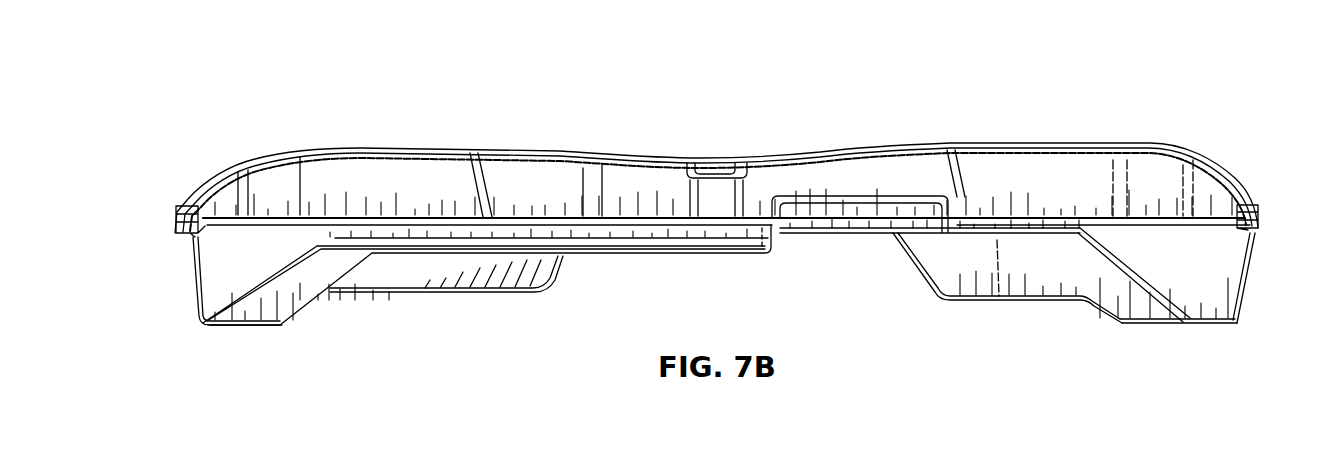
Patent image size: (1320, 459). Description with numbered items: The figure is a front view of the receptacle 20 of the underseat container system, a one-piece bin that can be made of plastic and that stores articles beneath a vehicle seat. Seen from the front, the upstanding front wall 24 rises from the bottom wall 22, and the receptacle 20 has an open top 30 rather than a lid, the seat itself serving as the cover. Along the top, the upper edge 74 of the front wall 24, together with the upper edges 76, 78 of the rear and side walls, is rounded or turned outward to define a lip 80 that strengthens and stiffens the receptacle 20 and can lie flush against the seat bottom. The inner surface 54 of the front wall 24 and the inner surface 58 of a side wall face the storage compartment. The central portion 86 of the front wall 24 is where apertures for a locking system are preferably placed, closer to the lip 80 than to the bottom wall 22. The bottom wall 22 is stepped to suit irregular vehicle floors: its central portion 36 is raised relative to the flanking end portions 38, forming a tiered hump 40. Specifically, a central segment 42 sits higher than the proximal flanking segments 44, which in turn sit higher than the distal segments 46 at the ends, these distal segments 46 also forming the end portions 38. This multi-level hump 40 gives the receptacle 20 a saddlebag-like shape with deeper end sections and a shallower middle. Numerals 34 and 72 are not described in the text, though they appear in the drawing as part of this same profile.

The receptacle 20 is at (266, 70).
The bottom wall 22 is at (732, 255).
The front wall 24 is at (1092, 165).
The open top 30 is at (221, 197).
The inclined wall 34 is at (1068, 305).
The central portion 36 is at (613, 256).
The end portions 38 is at (249, 331).
The hump 40 is at (813, 157).
The central segment 42 is at (641, 256).
The proximal flanking segments 44 is at (497, 292).
The distal segments 46 is at (227, 331).
The inner surface of front wall 54 is at (326, 172).
The inner surface of side wall 58 is at (1200, 183).
The lower flange 72 is at (407, 296).
The upper edge of front wall 74 is at (993, 148).
The upper edge of rear wall 76 is at (237, 230).
The upper edge of side wall 78 is at (1236, 182).
The lip 80 is at (394, 152).
The central portion of front wall 86 is at (537, 180).